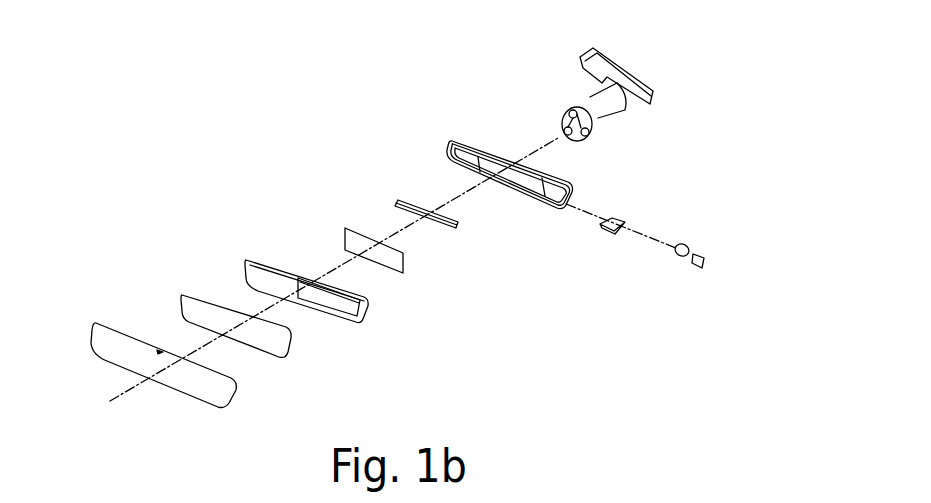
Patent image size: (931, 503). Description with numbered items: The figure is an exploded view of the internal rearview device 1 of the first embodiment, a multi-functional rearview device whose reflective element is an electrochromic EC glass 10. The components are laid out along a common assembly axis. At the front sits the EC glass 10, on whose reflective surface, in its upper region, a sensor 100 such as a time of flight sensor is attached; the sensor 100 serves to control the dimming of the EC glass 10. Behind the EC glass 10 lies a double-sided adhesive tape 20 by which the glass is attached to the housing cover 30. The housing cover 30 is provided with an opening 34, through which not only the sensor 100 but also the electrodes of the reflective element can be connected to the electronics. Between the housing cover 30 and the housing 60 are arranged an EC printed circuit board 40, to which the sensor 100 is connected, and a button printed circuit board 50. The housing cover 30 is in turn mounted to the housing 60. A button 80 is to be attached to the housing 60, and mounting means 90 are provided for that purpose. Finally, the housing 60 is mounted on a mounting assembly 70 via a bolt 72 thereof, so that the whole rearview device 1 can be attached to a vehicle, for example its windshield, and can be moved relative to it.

The internal rearview device 1 is at (493, 137).
The EC glass 10 is at (237, 393).
The sensor 100 is at (162, 352).
The housing cover / insert 20 is at (297, 347).
The housing cover 30 is at (348, 311).
The opening 34 is at (361, 327).
The EC printed circuit board 40 is at (407, 263).
The button printed circuit board 50 is at (463, 226).
The housing 60 is at (550, 204).
The mounting assembly 70 is at (633, 68).
The bolt 72 is at (565, 128).
The button 80 is at (607, 233).
The mounting means 90 is at (710, 268).